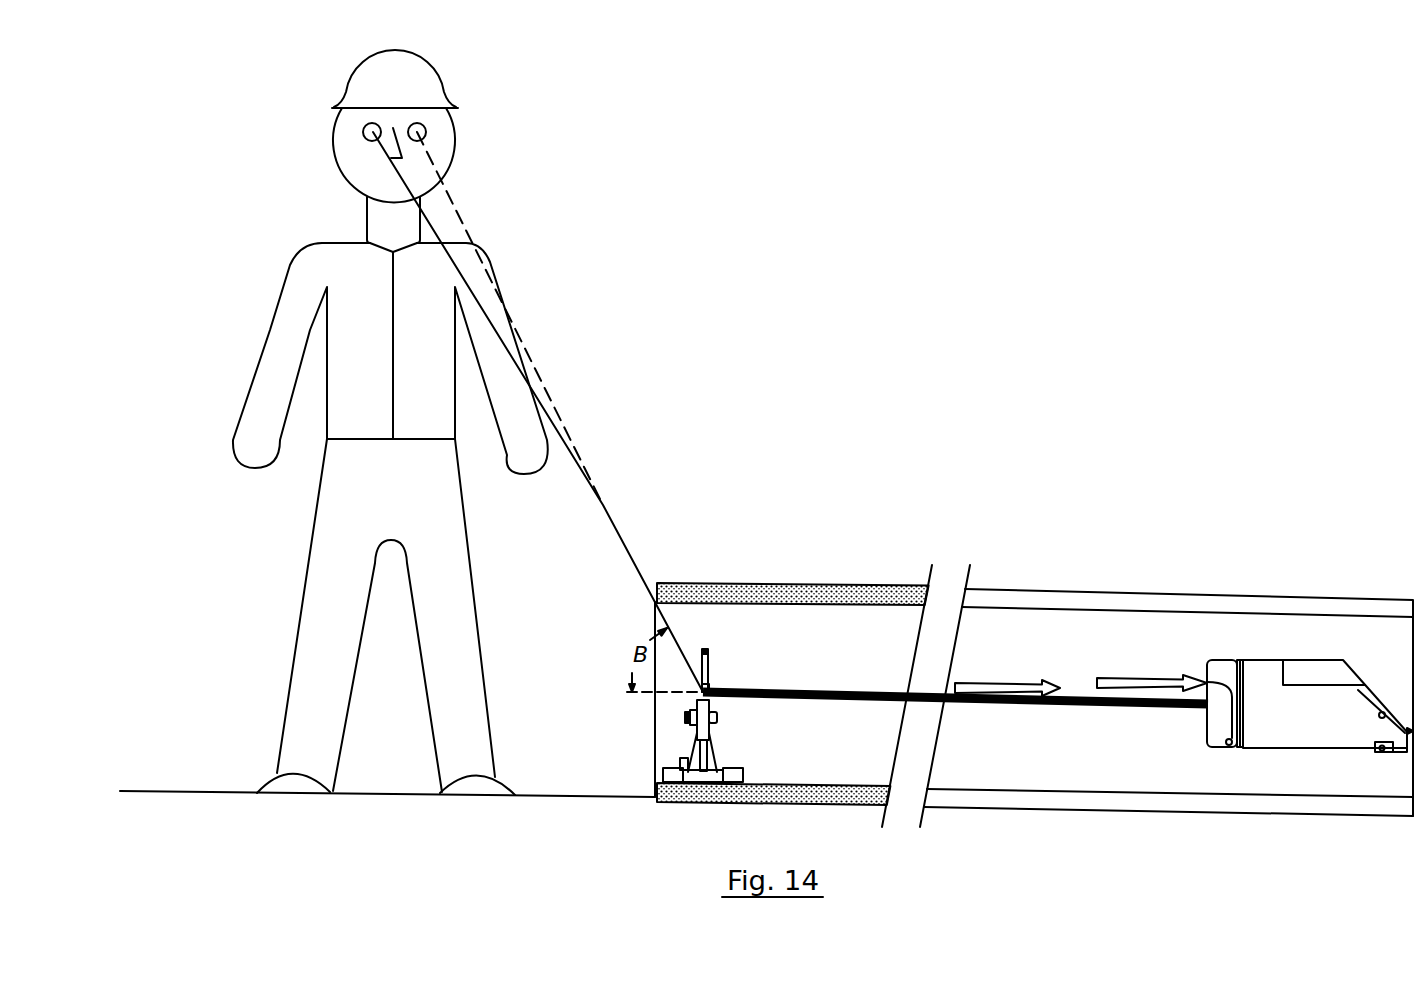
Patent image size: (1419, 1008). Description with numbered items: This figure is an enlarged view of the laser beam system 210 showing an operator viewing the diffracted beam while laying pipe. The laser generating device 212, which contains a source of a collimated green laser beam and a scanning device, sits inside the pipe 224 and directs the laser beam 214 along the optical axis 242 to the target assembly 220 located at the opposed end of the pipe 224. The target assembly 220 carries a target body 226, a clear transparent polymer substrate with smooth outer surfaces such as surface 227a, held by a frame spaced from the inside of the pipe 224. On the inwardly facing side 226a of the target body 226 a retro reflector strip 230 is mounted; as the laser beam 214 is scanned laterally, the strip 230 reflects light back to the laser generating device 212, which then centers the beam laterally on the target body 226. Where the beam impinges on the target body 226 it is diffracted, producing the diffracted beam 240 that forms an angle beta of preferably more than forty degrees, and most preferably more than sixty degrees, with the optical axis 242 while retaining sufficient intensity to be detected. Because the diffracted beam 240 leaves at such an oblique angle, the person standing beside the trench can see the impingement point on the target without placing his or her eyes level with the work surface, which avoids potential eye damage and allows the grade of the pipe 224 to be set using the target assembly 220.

The laser beam system 210 is at (1003, 775).
The laser generating device 212 is at (1290, 752).
The laser beam 214 is at (860, 690).
The target assembly 220 is at (662, 732).
The pipe 224 is at (1095, 808).
The target body 226 is at (725, 607).
The inwardly facing side 226a is at (707, 667).
The smooth outer surface 227a is at (710, 683).
The retro reflector strip 230 is at (1153, 678).
The diffracted beam 240 is at (606, 510).
The optical axis 242 is at (643, 692).